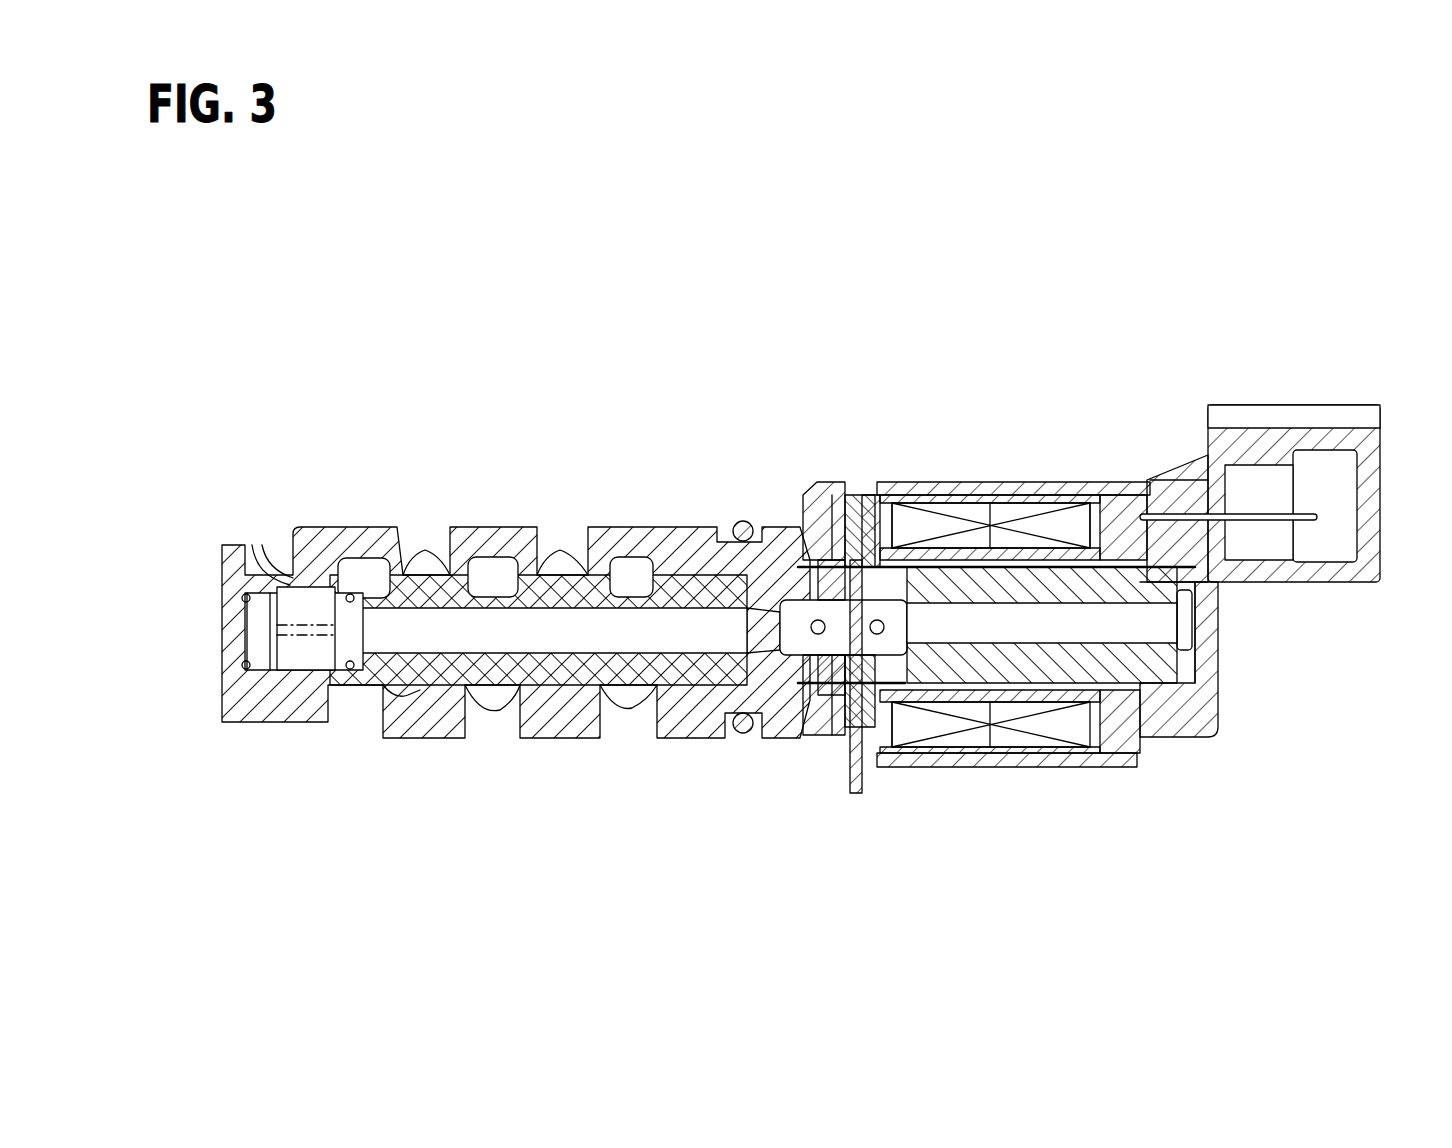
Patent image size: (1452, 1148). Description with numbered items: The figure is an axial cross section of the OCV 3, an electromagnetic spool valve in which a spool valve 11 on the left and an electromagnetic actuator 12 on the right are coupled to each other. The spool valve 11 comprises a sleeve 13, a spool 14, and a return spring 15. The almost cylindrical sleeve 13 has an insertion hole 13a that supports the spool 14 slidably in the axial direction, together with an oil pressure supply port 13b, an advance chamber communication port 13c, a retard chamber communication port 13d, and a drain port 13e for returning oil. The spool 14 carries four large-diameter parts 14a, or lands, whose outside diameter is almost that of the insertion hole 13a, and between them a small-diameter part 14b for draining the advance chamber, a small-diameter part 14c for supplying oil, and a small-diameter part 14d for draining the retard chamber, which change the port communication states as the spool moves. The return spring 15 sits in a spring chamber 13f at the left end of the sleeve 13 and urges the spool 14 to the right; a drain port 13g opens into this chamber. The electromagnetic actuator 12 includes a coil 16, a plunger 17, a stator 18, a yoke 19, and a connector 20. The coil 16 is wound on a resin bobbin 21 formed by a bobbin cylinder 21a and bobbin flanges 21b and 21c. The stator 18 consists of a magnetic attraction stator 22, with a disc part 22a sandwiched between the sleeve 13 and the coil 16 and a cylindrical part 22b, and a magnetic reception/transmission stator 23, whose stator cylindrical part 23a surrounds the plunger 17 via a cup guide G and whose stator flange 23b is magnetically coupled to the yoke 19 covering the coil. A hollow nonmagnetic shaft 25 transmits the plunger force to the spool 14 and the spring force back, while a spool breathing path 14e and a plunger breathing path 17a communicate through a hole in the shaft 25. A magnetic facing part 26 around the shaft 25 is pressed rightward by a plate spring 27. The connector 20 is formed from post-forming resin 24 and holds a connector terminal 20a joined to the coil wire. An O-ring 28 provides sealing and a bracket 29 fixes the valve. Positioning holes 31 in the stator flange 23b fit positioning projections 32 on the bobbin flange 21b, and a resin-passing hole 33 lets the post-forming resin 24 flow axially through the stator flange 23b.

The OCV 3 is at (1378, 400).
The spool valve 11 is at (845, 295).
The electromagnetic actuator 12 is at (1378, 295).
The sleeve 13 is at (297, 522).
The insertion hole 13a is at (500, 560).
The oil pressure supply port 13b is at (485, 720).
The advance chamber communication port 13c is at (422, 552).
The retard chamber communication port 13d is at (566, 548).
The drain port 13e is at (352, 712).
The spring chamber 13f is at (265, 612).
The drain port 13g is at (258, 552).
The spool 14 is at (347, 560).
The large-diameter parts 14a is at (398, 560).
The small-diameter part for draining the advance chamber 14b is at (392, 700).
The small-diameter part for supplying oil 14c is at (498, 690).
The small-diameter part for draining the retard chamber 14d is at (640, 690).
The spool breathing path 14e is at (702, 612).
The return spring 15 is at (268, 700).
The coil 16 is at (876, 525).
The plunger 17 is at (1150, 530).
The plunger breathing path 17a is at (1170, 630).
The stator 18 is at (1086, 870).
The yoke 19 is at (1118, 495).
The connector 20 is at (1303, 400).
The connector terminal 20a is at (1325, 517).
The bobbin 21 is at (1102, 408).
The bobbin cylinder 21a is at (990, 520).
The bobbin flange 21b is at (1085, 510).
The bobbin flange 21c is at (905, 540).
The magnetic attraction stator 22 is at (993, 825).
The disc part 22a is at (882, 760).
The cylindrical part 22b is at (950, 758).
The magnetic reception/transmission stator 23 is at (1123, 825).
The stator cylindrical part 23a is at (1025, 758).
The stator flange 23b is at (1118, 758).
The post-forming resin 24 is at (1200, 705).
The shaft 25 is at (828, 520).
The magnetic facing part 26 is at (868, 545).
The plate spring 27 is at (782, 528).
The O-ring 28 is at (752, 736).
The bracket 29 is at (857, 790).
The positioning holes 31 is at (1140, 742).
The positioning projections 32 is at (1145, 718).
The resin-passing hole 33 is at (1140, 735).
The cup guide G is at (1200, 645).